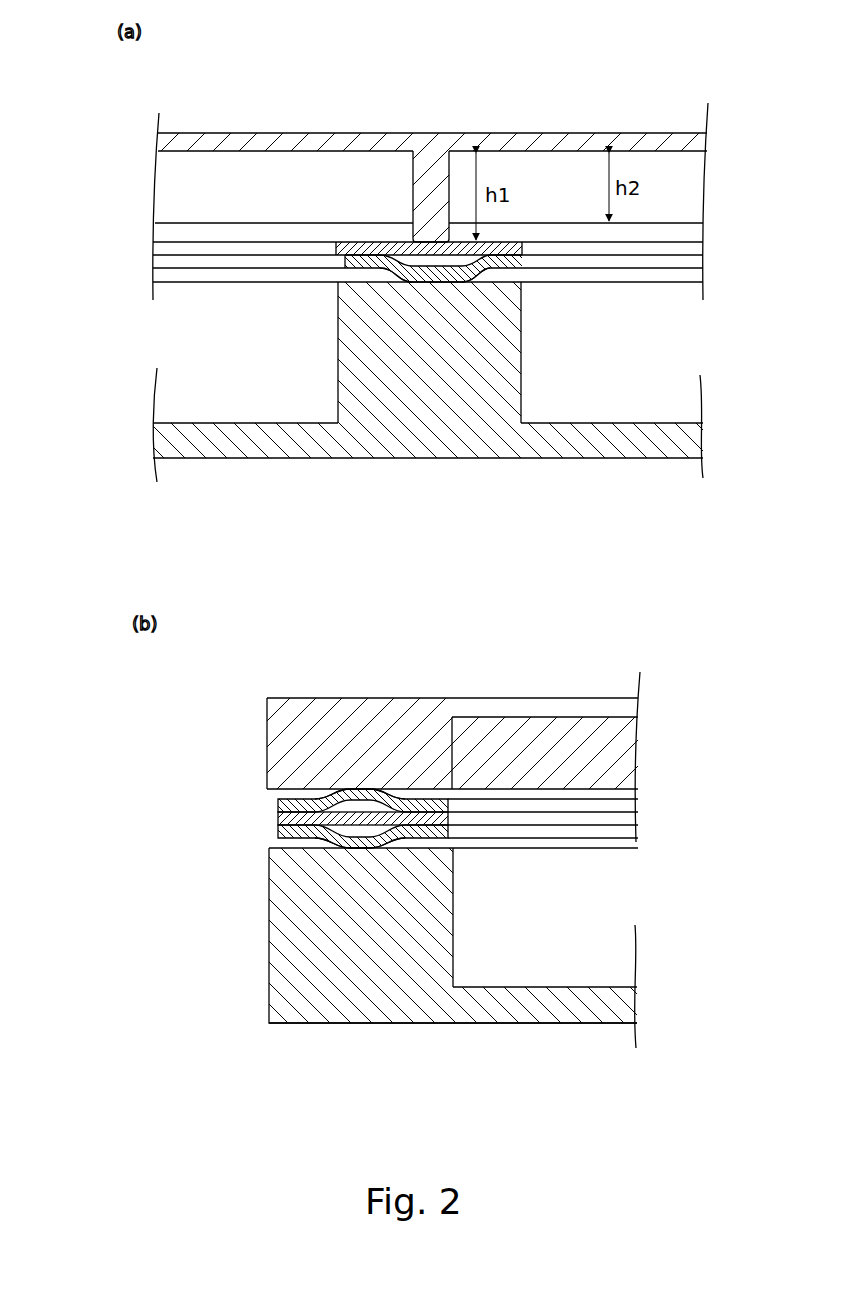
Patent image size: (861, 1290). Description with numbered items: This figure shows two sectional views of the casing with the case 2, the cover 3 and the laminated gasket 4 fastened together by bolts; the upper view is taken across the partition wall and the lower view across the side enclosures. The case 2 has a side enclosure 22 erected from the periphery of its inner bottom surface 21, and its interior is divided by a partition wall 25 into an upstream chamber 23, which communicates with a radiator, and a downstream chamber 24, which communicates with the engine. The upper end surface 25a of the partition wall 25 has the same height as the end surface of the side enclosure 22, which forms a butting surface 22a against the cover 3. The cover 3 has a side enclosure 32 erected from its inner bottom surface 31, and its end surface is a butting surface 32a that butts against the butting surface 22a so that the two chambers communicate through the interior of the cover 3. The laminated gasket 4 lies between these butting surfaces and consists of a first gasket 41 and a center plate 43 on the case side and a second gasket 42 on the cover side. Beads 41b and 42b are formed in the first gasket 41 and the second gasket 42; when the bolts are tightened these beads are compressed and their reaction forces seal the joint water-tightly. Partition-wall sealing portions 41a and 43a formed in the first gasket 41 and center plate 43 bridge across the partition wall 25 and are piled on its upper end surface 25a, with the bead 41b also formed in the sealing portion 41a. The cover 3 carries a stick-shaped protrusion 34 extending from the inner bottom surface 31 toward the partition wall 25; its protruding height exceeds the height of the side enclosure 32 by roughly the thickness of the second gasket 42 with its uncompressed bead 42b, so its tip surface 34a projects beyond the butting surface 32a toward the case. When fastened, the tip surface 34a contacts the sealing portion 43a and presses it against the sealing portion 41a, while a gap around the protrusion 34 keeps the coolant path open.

The case 2 is at (260, 470).
The cover 3 is at (336, 118).
The laminated gasket 4 is at (183, 770).
The inner bottom surface 21 is at (673, 433).
The side enclosure 22 is at (283, 935).
The butting surface 22a is at (455, 848).
The upstream chamber 23 is at (245, 425).
The downstream chamber 24 is at (612, 426).
The partition wall 25 is at (357, 397).
The upper end surface 25a is at (522, 283).
The inner bottom surface 31 is at (247, 152).
The side enclosure 32 is at (163, 192).
The butting surface 32a is at (185, 226).
The protrusion 34 is at (413, 178).
The tip surface 34a is at (410, 242).
The first gasket 41 is at (278, 833).
The partition-wall sealing portion 41a is at (345, 268).
The bead 41b is at (385, 283).
The second gasket 42 is at (278, 803).
The bead 42b is at (398, 791).
The center plate 43 is at (278, 818).
The partition-wall sealing portion 43a is at (336, 249).